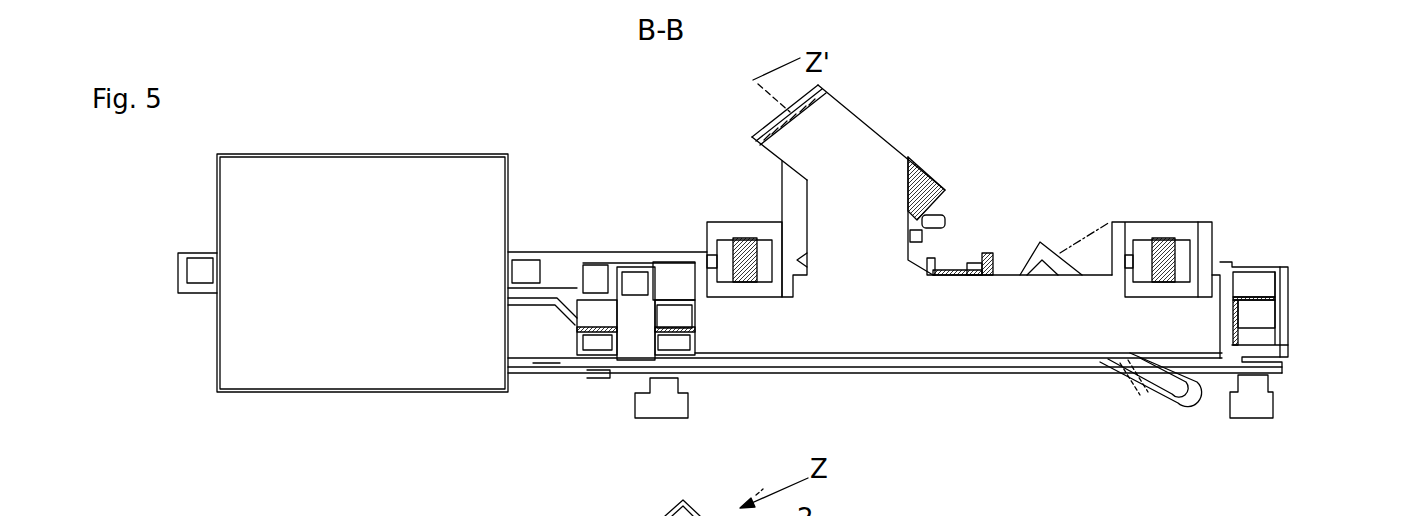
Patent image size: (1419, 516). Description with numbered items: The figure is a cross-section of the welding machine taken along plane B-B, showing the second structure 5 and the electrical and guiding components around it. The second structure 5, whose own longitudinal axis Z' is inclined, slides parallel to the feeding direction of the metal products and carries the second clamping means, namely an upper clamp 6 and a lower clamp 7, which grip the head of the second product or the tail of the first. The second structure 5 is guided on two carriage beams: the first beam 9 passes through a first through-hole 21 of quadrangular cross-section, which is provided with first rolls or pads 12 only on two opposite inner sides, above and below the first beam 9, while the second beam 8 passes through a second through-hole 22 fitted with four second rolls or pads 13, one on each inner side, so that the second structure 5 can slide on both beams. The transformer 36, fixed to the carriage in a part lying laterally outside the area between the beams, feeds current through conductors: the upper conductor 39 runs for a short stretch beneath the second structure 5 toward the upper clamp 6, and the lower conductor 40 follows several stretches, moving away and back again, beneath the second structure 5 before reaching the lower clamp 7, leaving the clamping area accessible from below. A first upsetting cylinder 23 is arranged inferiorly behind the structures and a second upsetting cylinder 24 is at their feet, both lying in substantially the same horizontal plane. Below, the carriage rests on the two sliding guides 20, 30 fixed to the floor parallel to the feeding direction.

The second structure 5 is at (832, 128).
The upper clamp 6 is at (933, 213).
The lower clamp 7 is at (178, 265).
The second beam 8 is at (633, 313).
The first beam 9 is at (1268, 318).
The first rolls or pads 12 is at (1253, 298).
The second rolls or pads 13 is at (688, 318).
The sliding guide 20 is at (1253, 403).
The first through-hole 21 is at (1272, 298).
The second through-hole 22 is at (657, 335).
The first upsetting cylinder 23 is at (742, 255).
The second upsetting cylinder 24 is at (1162, 252).
The sliding guide 30 is at (663, 400).
The transformer 36 is at (358, 187).
The upper conductor 39 is at (543, 300).
The lower conductor 40 is at (1042, 252).